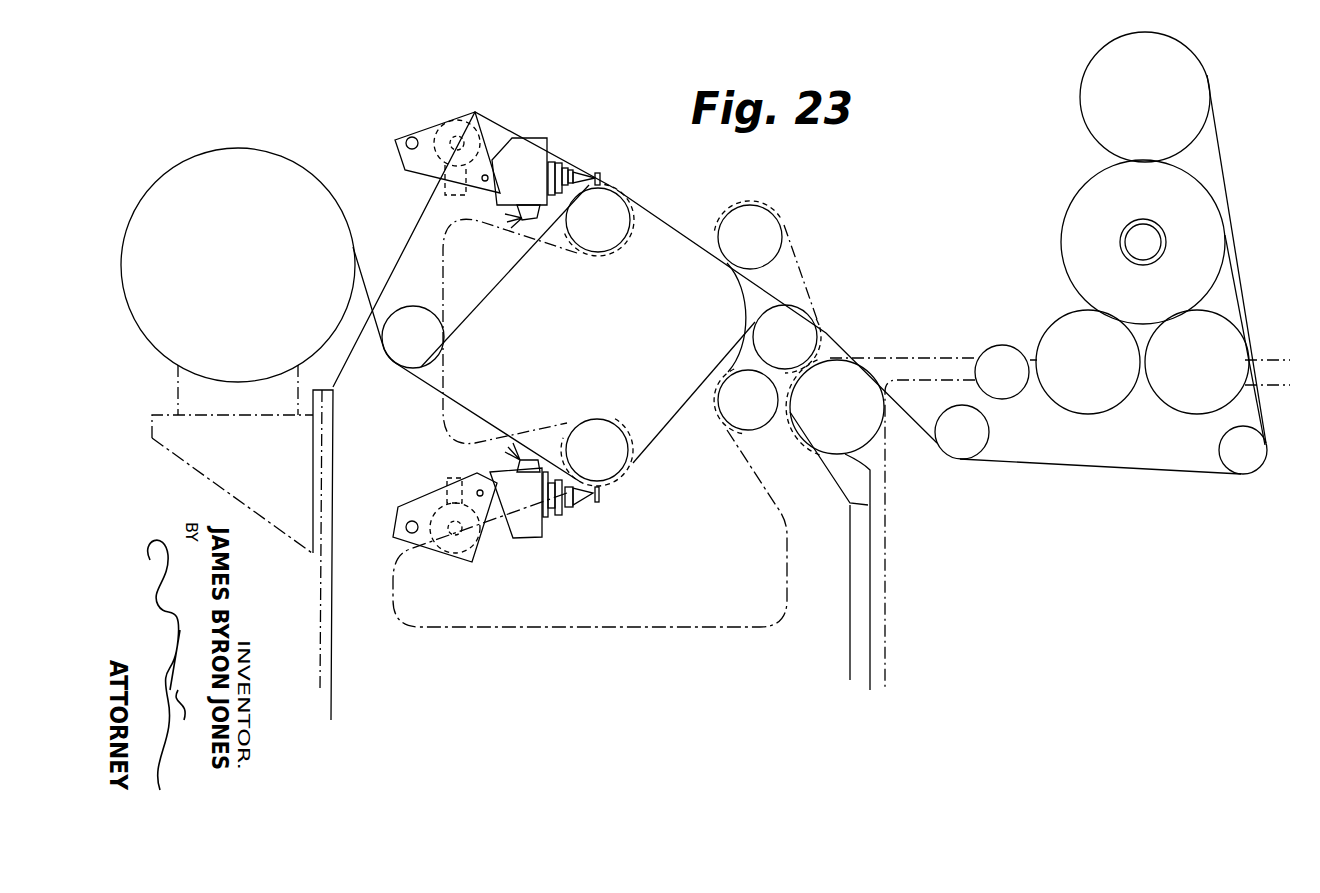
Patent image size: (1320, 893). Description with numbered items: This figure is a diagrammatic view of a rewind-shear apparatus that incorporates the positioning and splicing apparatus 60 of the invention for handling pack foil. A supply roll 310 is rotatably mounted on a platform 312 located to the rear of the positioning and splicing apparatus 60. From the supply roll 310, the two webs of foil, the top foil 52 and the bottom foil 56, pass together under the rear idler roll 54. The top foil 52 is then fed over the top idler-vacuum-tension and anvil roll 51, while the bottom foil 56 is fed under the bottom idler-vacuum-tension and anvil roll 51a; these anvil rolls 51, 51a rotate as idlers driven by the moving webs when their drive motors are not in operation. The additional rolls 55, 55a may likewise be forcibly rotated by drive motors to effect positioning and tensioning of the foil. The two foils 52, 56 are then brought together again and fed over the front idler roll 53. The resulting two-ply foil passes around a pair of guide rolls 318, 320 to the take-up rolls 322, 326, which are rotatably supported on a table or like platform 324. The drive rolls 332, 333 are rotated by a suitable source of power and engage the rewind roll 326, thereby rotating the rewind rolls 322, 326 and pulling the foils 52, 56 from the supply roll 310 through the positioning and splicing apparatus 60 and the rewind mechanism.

The supply roll 310 is at (305, 190).
The platform 312 is at (190, 455).
The rear idler roll 54 is at (405, 358).
The top foil 52 is at (500, 283).
The bottom foil 56 is at (482, 413).
The top idler-vacuum-tension and anvil roll 51 is at (605, 205).
The bottom idler-vacuum-tension and anvil roll 51a is at (607, 437).
The roll 55 is at (758, 222).
The roll 55a is at (737, 413).
The front idler roll 53 is at (807, 340).
The table or like platform 324 is at (957, 368).
The guide roll 318 is at (963, 448).
The guide roll 320 is at (1250, 458).
The drive roll 333 is at (1080, 400).
The drive roll 332 is at (1182, 400).
The take-up roll 322 is at (1095, 109).
The rewind roll 326 is at (1080, 220).
The positioning and splicing apparatus 60 is at (559, 639).